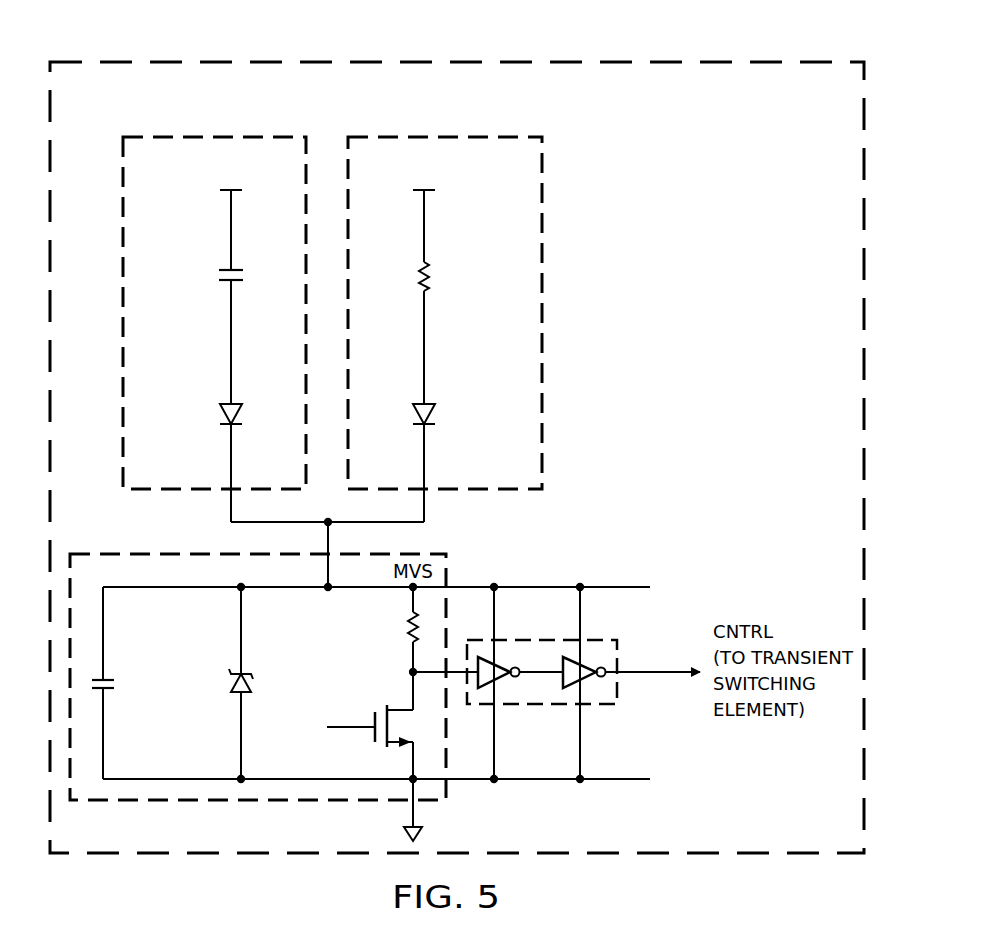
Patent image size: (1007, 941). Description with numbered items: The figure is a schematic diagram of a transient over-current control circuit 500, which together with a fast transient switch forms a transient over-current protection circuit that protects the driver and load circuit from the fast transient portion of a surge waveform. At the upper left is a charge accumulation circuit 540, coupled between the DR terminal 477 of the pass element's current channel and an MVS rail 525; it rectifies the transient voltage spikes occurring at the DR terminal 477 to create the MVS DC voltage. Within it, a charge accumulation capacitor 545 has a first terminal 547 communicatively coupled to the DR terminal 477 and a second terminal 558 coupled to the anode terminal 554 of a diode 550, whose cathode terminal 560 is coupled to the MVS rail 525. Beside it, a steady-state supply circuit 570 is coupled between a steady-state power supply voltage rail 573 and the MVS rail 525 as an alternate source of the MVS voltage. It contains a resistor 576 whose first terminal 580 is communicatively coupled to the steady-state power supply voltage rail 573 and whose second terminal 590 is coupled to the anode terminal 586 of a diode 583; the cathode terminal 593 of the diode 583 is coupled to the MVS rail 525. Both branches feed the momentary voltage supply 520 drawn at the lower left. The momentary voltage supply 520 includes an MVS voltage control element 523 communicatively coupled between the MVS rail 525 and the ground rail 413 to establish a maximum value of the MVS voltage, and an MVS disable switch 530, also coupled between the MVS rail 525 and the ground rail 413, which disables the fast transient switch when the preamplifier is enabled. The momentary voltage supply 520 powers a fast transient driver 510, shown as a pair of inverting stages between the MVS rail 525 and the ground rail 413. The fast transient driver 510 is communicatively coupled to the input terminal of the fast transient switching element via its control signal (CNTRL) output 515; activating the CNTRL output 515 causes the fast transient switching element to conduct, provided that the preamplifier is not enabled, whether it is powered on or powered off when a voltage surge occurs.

The transient over-current control circuit 500 is at (636, 56).
The charge accumulation circuit 540 is at (176, 133).
The steady-state supply circuit 570 is at (483, 133).
The DR terminal 477 is at (214, 175).
The first terminal 547 is at (229, 232).
The charge accumulation capacitor 545 is at (219, 275).
The second terminal 558 is at (230, 308).
The anode terminal 554 is at (229, 403).
The diode 550 is at (239, 429).
The cathode terminal 560 is at (236, 428).
The steady-state power supply voltage rail 573 is at (428, 192).
The first terminal 580 is at (426, 234).
The resistor 576 is at (430, 276).
The second terminal 590 is at (427, 308).
The diode 583 is at (414, 429).
The anode terminal 586 is at (430, 402).
The cathode terminal 593 is at (418, 428).
The momentary voltage supply 520 is at (128, 552).
The MVS rail 525 is at (177, 589).
The MVS voltage control element 523 is at (230, 679).
The MVS disable switch 530 is at (400, 705).
The fast transient driver 510 is at (620, 647).
The control signal (CNTRL) output 515 is at (656, 680).
The ground rail 413 is at (537, 782).